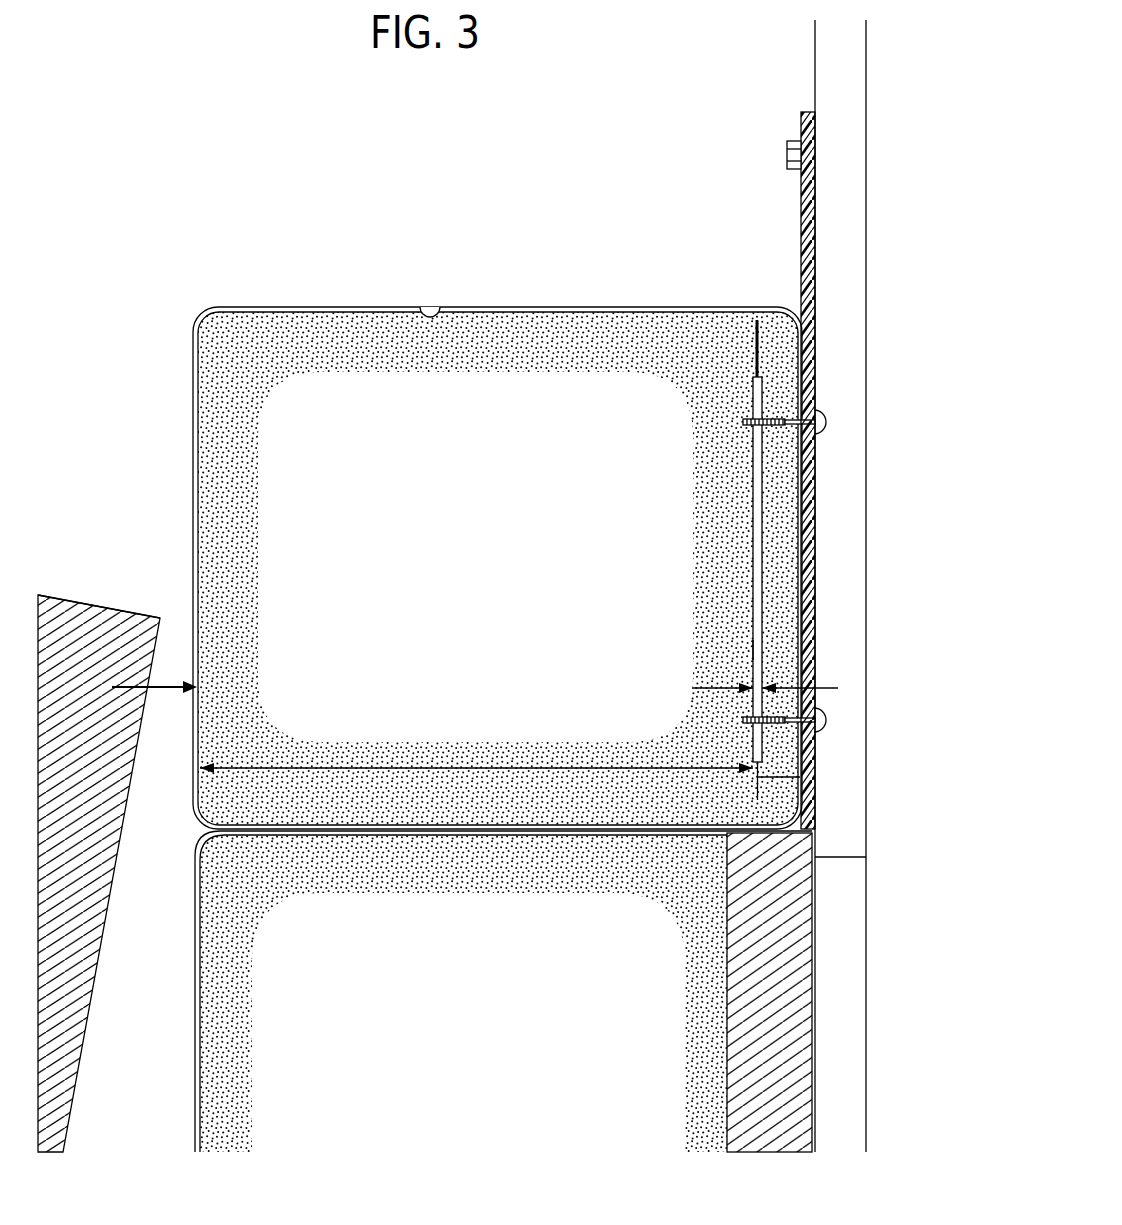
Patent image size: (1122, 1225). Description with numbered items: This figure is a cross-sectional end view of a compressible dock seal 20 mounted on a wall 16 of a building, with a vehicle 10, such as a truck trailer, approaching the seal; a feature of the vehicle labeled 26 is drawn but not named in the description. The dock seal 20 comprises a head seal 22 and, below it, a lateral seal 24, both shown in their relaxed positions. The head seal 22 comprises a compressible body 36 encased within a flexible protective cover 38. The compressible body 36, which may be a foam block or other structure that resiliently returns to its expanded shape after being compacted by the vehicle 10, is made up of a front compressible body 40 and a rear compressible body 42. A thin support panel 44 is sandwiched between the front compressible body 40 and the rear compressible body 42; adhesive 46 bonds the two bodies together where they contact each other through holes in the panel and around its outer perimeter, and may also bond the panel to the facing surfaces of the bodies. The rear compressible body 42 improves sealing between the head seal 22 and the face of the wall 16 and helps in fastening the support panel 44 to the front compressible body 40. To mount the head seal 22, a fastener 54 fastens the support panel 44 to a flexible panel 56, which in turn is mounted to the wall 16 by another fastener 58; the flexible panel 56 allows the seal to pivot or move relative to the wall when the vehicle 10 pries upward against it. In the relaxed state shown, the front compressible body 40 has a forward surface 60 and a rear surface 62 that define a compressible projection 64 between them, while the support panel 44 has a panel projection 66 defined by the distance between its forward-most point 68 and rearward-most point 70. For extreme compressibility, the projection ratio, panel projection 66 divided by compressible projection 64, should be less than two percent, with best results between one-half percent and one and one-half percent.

The vehicle 10 is at (83, 605).
The wall 16 is at (815, 68).
The compressible dock seal 20 is at (144, 250).
The head seal 22 is at (193, 435).
The lateral seal 24 is at (195, 963).
The top surface of structure 26 is at (115, 610).
The compressible body 36 is at (491, 494).
The flexible protective cover 38 is at (430, 317).
The front compressible body 40 is at (705, 330).
The rear compressible body 42 is at (779, 330).
The support panel 44 is at (762, 400).
The adhesive 46 is at (762, 353).
The fastener 54 is at (822, 425).
The flexible panel 56 is at (801, 205).
The fastener 58 is at (787, 158).
The forward surface 60 is at (197, 740).
The rear surface 62 is at (757, 777).
The compressible projection 64 is at (460, 768).
The panel projection 66 is at (693, 688).
The forward-most point 68 is at (753, 650).
The rearward-most point 70 is at (762, 660).